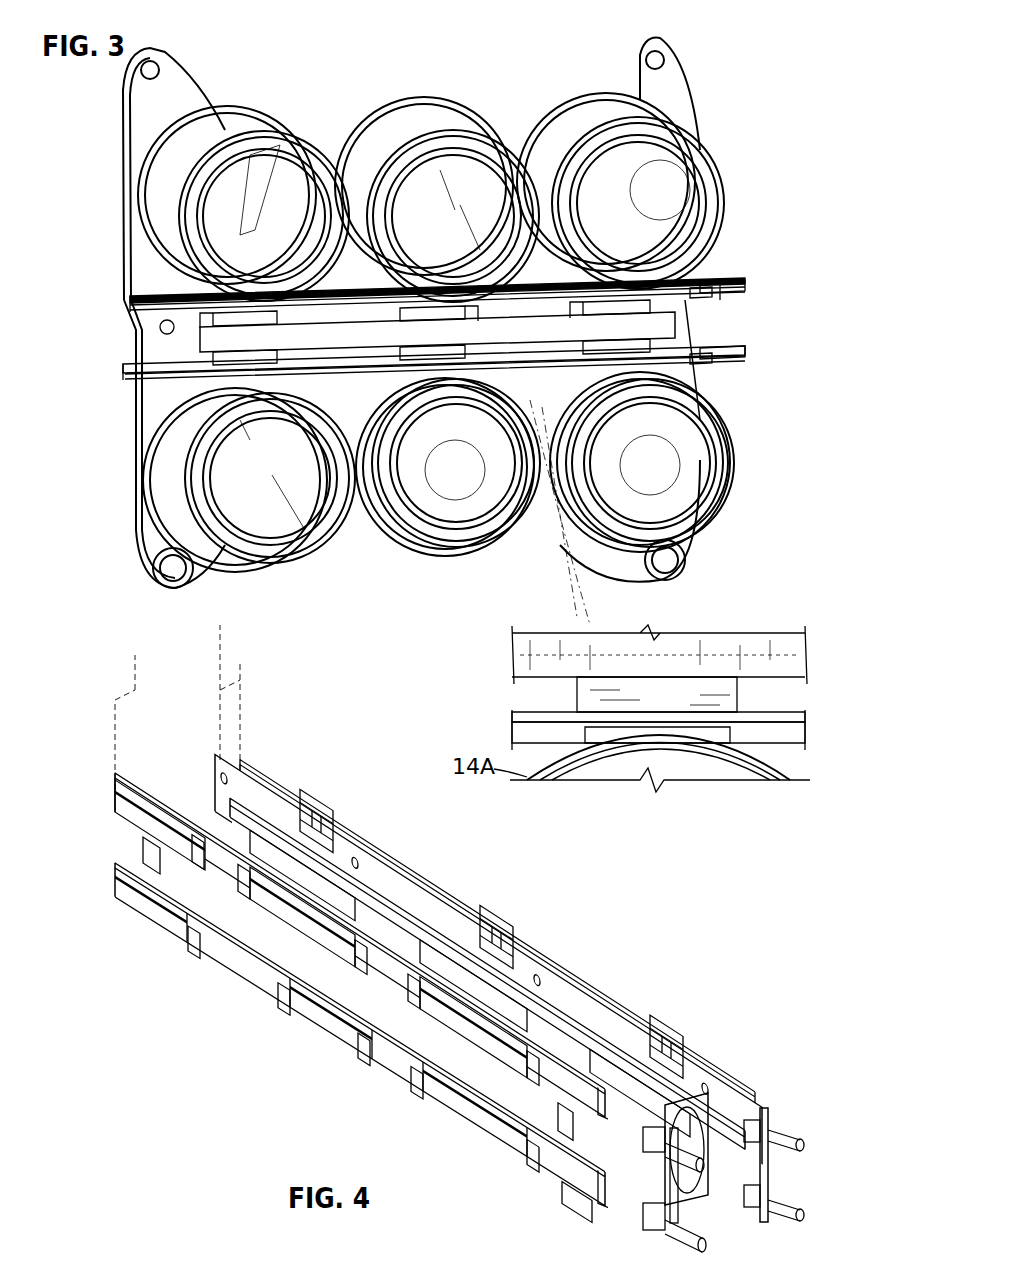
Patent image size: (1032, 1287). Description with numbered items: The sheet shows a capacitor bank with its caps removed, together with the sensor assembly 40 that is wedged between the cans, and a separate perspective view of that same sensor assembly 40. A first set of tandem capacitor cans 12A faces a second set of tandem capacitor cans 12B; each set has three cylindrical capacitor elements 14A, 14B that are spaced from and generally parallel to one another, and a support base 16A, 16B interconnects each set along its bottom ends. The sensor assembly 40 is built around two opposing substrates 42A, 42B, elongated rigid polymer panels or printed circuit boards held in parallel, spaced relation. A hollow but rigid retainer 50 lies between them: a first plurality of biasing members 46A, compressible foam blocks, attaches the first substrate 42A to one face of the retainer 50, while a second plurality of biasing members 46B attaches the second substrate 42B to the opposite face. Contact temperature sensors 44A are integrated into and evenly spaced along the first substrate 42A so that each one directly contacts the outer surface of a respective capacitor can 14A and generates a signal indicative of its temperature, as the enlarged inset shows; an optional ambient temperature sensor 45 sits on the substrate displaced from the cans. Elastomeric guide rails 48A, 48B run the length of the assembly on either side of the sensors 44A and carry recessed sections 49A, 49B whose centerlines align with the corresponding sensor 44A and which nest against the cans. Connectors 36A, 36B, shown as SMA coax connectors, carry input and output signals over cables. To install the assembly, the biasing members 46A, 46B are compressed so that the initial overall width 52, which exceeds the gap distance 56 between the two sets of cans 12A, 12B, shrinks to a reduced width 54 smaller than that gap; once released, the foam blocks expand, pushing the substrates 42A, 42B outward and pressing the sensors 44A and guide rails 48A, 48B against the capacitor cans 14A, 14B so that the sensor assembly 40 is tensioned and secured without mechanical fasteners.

In FIG. 3, the first set of tandem capacitor cans 12A is at (362, 552).
In FIG. 3, the second set of tandem capacitor cans 12B is at (492, 100).
In FIG. 3, the cylindrical capacitor elements 14A is at (285, 562).
In FIG. 3, the cylindrical capacitor elements 14B is at (224, 130).
In FIG. 3, the support base 16A is at (136, 450).
In FIG. 3, the support base 16B is at (126, 190).
In FIG. 3, the connector 36A is at (742, 377).
In FIG. 4, the connector 36A is at (685, 1170).
In FIG. 3, the connector 36B is at (742, 277).
In FIG. 4, the connector 36B is at (805, 1205).
In FIG. 3, the sensor assembly 40 is at (162, 277).
In FIG. 4, the sensor assembly 40 is at (665, 915).
In FIG. 3, the first substrate 42A is at (125, 367).
In FIG. 4, the first substrate 42A is at (125, 785).
In FIG. 3, the second substrate 42B is at (132, 299).
In FIG. 4, the second substrate 42B is at (217, 757).
In FIG. 3, the contact temperature sensors 44A is at (647, 737).
In FIG. 4, the contact temperature sensors 44A is at (218, 905).
In FIG. 4, the ambient temperature sensor 45 is at (142, 850).
In FIG. 3, the first plurality of biasing members 46A is at (250, 366).
In FIG. 4, the first plurality of biasing members 46A is at (270, 848).
In FIG. 3, the second plurality of biasing members 46B is at (264, 319).
In FIG. 4, the second plurality of biasing members 46B is at (335, 830).
In FIG. 3, the elastomeric guide rail 48A is at (127, 377).
In FIG. 4, the elastomeric guide rail 48A is at (330, 1000).
In FIG. 3, the elastomeric guide rail 48B is at (130, 297).
In FIG. 4, the elastomeric guide rail 48B is at (570, 972).
In FIG. 4, the recessed sections 49A is at (195, 900).
In FIG. 3, the recessed sections 49B is at (234, 302).
In FIG. 3, the rigid retainer 50 is at (692, 322).
In FIG. 4, the rigid retainer 50 is at (372, 888).
In FIG. 4, the overall width 52 is at (110, 708).
In FIG. 4, the reduced width 54 is at (295, 670).
In FIG. 3, the gap distance 56 is at (452, 290).